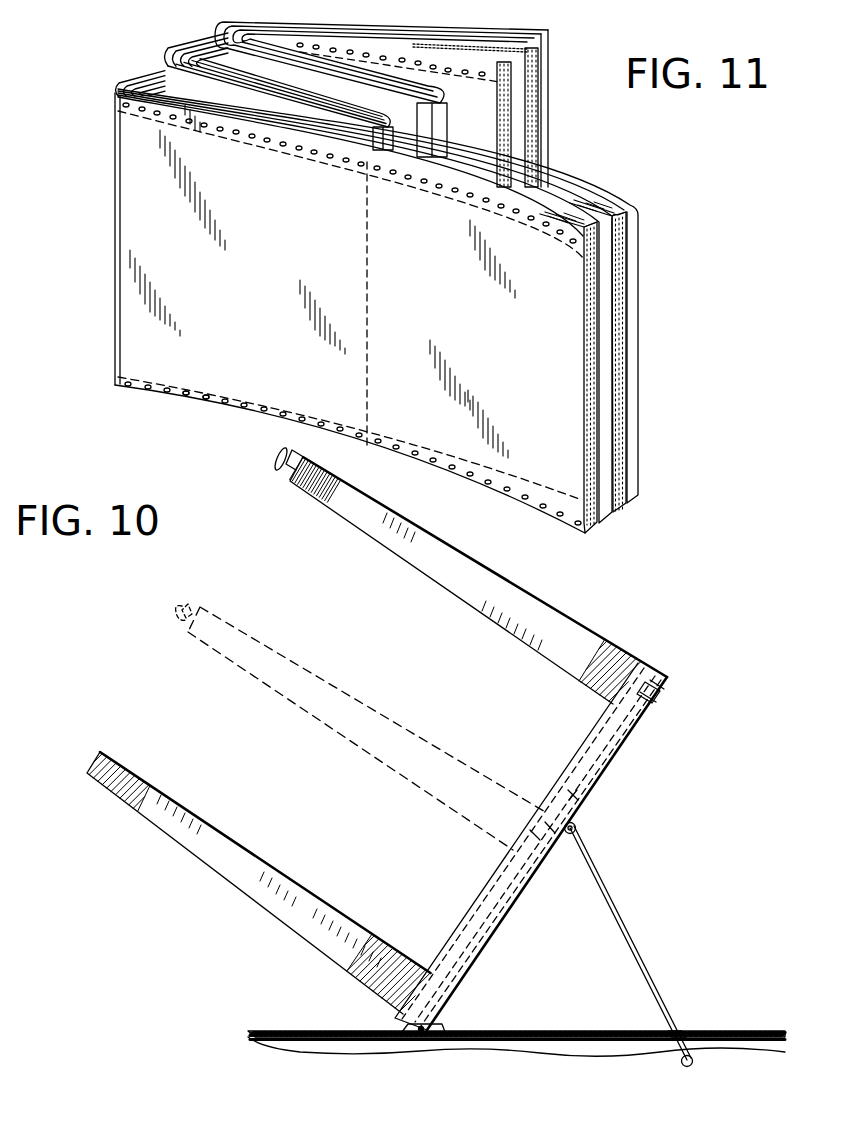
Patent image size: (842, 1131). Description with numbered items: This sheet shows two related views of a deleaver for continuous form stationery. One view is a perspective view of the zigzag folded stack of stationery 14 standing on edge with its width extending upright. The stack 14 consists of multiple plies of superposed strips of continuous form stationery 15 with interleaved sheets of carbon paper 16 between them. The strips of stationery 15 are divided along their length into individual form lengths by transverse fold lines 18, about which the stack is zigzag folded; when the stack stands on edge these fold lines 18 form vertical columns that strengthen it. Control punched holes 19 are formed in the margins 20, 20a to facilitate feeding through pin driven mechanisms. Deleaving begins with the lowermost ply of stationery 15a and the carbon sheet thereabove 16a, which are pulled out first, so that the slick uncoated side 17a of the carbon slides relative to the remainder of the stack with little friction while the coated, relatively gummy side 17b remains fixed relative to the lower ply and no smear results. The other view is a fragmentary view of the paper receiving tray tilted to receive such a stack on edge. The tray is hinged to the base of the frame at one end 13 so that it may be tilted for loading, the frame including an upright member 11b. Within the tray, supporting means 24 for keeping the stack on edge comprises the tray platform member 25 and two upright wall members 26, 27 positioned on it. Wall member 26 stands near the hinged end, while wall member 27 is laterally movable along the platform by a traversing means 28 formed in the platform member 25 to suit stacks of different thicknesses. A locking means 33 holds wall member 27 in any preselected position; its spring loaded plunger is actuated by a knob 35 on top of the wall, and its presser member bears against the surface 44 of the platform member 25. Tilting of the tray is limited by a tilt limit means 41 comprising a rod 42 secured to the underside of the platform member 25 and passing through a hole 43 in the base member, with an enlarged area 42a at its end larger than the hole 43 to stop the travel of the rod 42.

In FIG. 10, the upright member 11b is at (572, 1010).
In FIG. 10, the hinged end 13 is at (405, 1025).
In FIG. 11, the zigzag folded stack of stationery 14 is at (104, 229).
In FIG. 11, the continuous form stationery 15 is at (252, 274).
In FIG. 11, the lowermost ply of stationery 15a is at (480, 134).
In FIG. 11, the carbon paper 16 is at (600, 400).
In FIG. 11, the carbon sheet above the lowermost ply 16a is at (625, 246).
In FIG. 11, the slick uncoated side of the carbon 17a is at (595, 201).
In FIG. 11, the coated side of the carbon 17b is at (505, 94).
In FIG. 11, the fold lines 18 is at (368, 248).
In FIG. 11, the control punched holes 19 is at (207, 394).
In FIG. 11, the margin 20 is at (170, 394).
In FIG. 11, the margin 20a is at (342, 165).
In FIG. 10, the supporting means 24 is at (176, 845).
In FIG. 10, the tray platform member 25 is at (537, 846).
In FIG. 10, the wall member 26 is at (225, 834).
In FIG. 10, the wall member 27 is at (427, 579).
In FIG. 10, the traversing means 28 is at (575, 795).
In FIG. 10, the locking means 33 is at (656, 688).
In FIG. 10, the knob 35 is at (284, 469).
In FIG. 10, the tilt limit means 41 is at (638, 956).
In FIG. 10, the rod 42 is at (612, 898).
In FIG. 10, the enlarged area 42a is at (681, 1066).
In FIG. 10, the hole 43 is at (680, 1032).
In FIG. 10, the surface of the platform member 44 is at (588, 760).